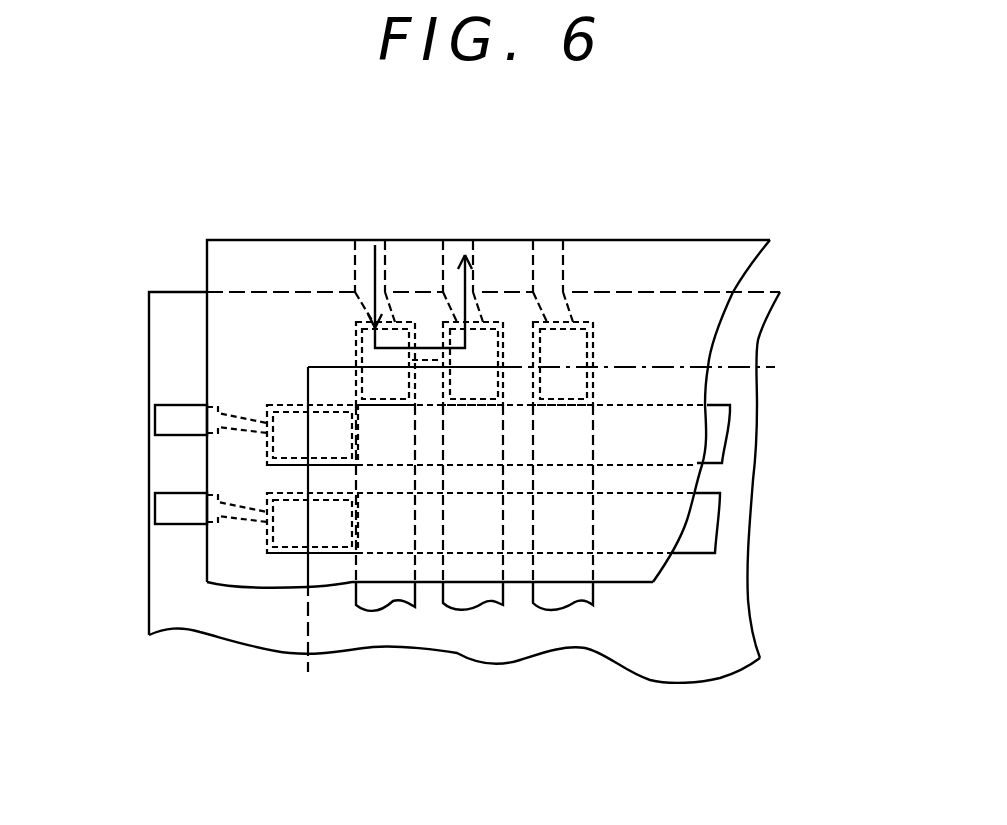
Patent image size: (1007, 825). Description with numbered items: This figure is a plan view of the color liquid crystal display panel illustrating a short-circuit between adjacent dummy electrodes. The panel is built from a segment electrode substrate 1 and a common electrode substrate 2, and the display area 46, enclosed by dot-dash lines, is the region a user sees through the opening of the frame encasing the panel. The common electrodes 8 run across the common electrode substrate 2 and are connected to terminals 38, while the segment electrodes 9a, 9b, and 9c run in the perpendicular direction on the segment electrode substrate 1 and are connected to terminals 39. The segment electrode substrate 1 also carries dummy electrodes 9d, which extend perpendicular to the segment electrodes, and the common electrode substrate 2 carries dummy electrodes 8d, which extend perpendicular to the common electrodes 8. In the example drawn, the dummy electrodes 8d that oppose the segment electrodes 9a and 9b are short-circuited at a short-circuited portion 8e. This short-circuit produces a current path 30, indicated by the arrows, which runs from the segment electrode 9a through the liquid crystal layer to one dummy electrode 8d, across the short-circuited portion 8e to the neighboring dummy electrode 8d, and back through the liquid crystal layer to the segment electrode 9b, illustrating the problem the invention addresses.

The segment electrode substrate 1 is at (617, 250).
The common electrode substrate 2 is at (167, 557).
The common electrode 8 is at (720, 432).
The dummy electrode 8d is at (370, 352).
The short-circuited portion 8e is at (432, 338).
The segment electrode 9a is at (393, 598).
The segment electrode 9b is at (475, 597).
The segment electrode 9c is at (563, 598).
The dummy electrode 9d is at (292, 540).
The current path 30 is at (383, 323).
The terminal 38 is at (162, 507).
The terminal 39 is at (549, 238).
The display area 46 is at (690, 387).